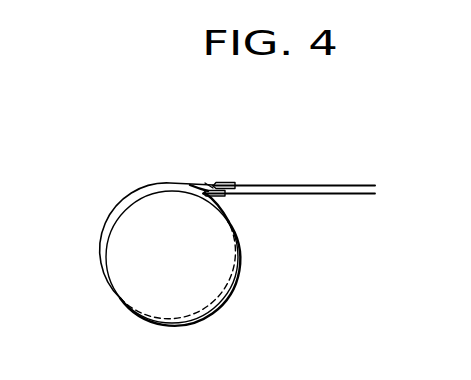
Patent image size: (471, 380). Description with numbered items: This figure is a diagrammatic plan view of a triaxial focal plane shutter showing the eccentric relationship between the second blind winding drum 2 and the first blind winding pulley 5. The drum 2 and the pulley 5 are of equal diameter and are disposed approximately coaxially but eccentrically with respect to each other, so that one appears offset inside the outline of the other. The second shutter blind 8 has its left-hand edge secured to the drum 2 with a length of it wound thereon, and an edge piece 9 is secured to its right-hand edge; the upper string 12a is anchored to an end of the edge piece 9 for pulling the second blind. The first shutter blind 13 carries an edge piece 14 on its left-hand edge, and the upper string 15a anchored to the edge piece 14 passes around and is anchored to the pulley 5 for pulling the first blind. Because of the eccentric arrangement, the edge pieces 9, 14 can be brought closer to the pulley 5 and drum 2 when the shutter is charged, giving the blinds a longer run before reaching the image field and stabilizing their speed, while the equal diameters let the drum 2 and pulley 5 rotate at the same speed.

The second blind winding drum 2 is at (200, 320).
The first blind winding pulley 5 is at (110, 223).
The second shutter blind 8 is at (192, 186).
The edge piece 9 is at (218, 196).
The upper string 12a is at (324, 195).
The first shutter blind 13 is at (305, 185).
The edge piece 14 is at (227, 183).
The upper string 15a is at (206, 184).